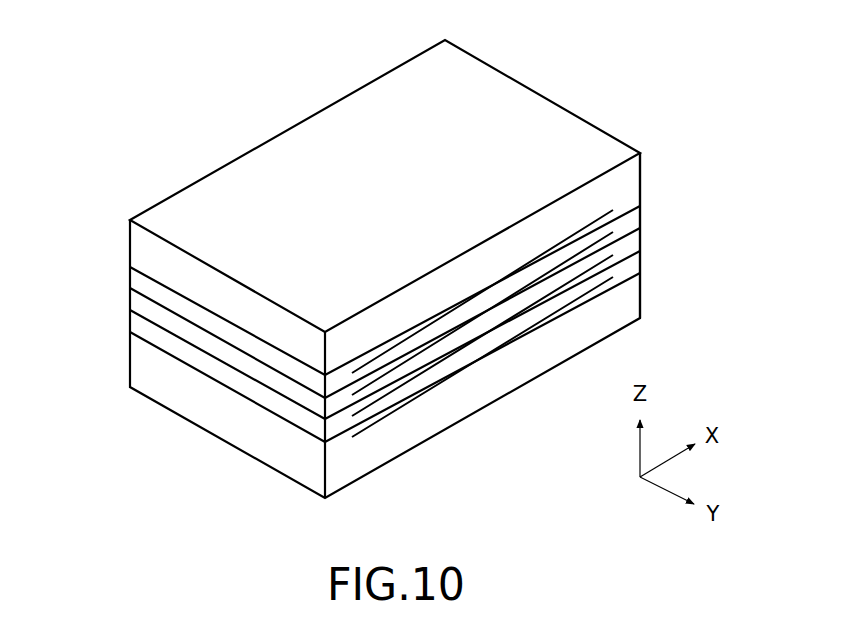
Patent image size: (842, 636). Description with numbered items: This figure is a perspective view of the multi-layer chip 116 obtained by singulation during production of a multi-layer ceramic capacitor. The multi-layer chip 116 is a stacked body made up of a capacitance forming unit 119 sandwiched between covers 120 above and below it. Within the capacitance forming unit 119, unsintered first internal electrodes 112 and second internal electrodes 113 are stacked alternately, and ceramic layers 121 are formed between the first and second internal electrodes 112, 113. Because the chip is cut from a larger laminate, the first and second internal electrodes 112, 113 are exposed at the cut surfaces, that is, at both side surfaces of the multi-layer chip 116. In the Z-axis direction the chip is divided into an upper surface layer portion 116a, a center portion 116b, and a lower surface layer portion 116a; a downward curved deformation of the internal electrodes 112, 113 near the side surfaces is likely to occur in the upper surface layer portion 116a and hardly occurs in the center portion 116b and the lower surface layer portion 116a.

The multi-layer chip 116 is at (565, 68).
The upper surface layer portion and lower surface layer portion 116a is at (641, 153).
The center portion 116b is at (641, 206).
The capacitance forming unit 119 is at (127, 267).
The covers 120 is at (127, 220).
The ceramic layers 121 is at (548, 287).
The first internal electrodes 112 is at (235, 395).
The second internal electrodes 113 is at (351, 373).